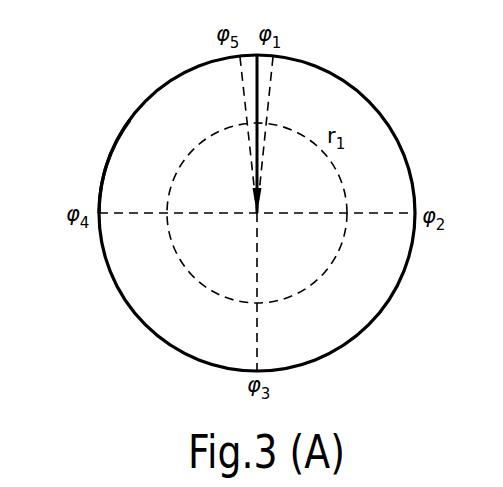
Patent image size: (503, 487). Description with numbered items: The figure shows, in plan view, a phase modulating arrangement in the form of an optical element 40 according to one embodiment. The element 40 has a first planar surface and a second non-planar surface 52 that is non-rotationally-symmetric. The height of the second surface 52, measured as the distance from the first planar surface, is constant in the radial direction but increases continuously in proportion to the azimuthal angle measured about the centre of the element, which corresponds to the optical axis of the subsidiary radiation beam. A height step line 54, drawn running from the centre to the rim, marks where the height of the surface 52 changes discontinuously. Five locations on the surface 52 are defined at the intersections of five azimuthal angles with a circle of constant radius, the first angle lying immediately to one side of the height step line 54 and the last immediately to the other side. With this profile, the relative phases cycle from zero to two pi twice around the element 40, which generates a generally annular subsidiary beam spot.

The optical element 40 is at (372, 102).
The second non-planar surface 52 is at (128, 132).
The height step line 54 is at (258, 92).